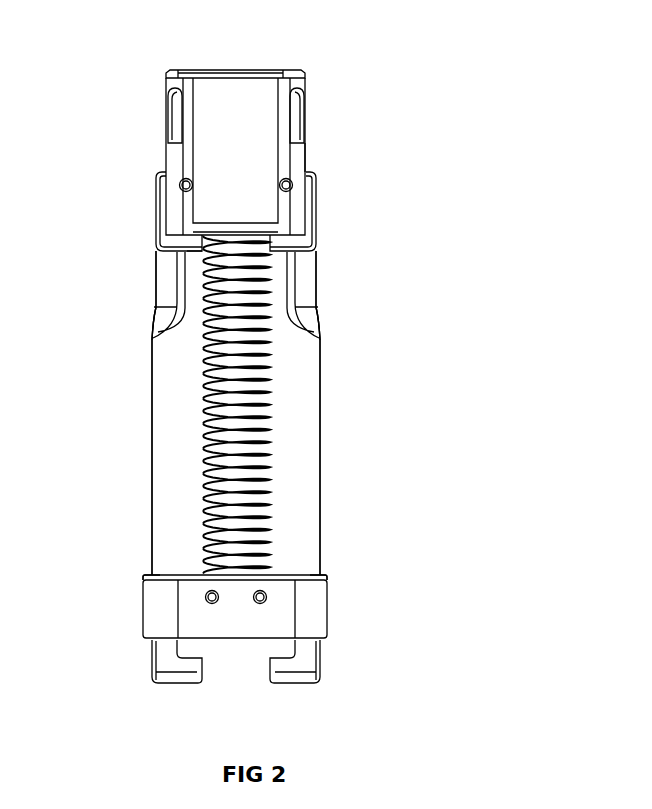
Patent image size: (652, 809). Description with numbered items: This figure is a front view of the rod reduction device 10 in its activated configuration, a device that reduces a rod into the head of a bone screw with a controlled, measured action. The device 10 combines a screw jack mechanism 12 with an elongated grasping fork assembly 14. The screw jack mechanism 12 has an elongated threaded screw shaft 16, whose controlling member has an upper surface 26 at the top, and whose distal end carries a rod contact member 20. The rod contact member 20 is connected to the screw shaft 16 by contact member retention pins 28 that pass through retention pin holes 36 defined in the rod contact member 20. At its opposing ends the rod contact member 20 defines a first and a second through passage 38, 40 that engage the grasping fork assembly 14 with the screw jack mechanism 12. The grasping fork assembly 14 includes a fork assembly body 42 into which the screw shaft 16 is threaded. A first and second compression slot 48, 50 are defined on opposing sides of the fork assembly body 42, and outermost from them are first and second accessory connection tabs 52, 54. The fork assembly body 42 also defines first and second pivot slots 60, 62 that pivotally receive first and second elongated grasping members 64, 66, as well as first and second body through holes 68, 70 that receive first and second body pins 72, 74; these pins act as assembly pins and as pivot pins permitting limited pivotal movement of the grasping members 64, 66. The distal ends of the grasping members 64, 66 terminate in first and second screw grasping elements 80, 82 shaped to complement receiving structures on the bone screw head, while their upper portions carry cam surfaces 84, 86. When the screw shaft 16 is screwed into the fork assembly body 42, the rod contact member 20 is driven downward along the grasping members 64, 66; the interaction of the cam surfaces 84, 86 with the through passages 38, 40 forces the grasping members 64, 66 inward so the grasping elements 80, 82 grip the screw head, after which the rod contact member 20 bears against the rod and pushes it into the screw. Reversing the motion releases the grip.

The rod reduction device 10 is at (470, 355).
The screw jack mechanism 12 is at (200, 265).
The elongated grasping fork assembly 14 is at (158, 412).
The elongated threaded screw shaft 16 is at (272, 352).
The rod contact member 20 is at (242, 628).
The upper surface 26 is at (252, 69).
The contact member retention pins 28 is at (205, 597).
The retention pin holes 36 is at (206, 603).
The first through passage 38 is at (150, 573).
The second through passage 40 is at (325, 574).
The fork assembly body 42 is at (272, 157).
The first compression slot 48 is at (177, 128).
The second compression slot 50 is at (300, 128).
The first accessory connection tab 52 is at (168, 93).
The second accessory connection tab 54 is at (303, 87).
The first pivot slot 60 is at (167, 168).
The second pivot slot 62 is at (305, 166).
The first elongated grasping member 64 is at (160, 250).
The second elongated grasping member 66 is at (317, 255).
The first body through hole 68 is at (182, 190).
The second body through hole 70 is at (315, 173).
The first body pin 72 is at (181, 184).
The second body pin 74 is at (293, 185).
The first screw grasping element 80 is at (188, 673).
The second screw grasping element 82 is at (300, 675).
The first cam surface 84 is at (165, 317).
The second cam surface 86 is at (313, 322).